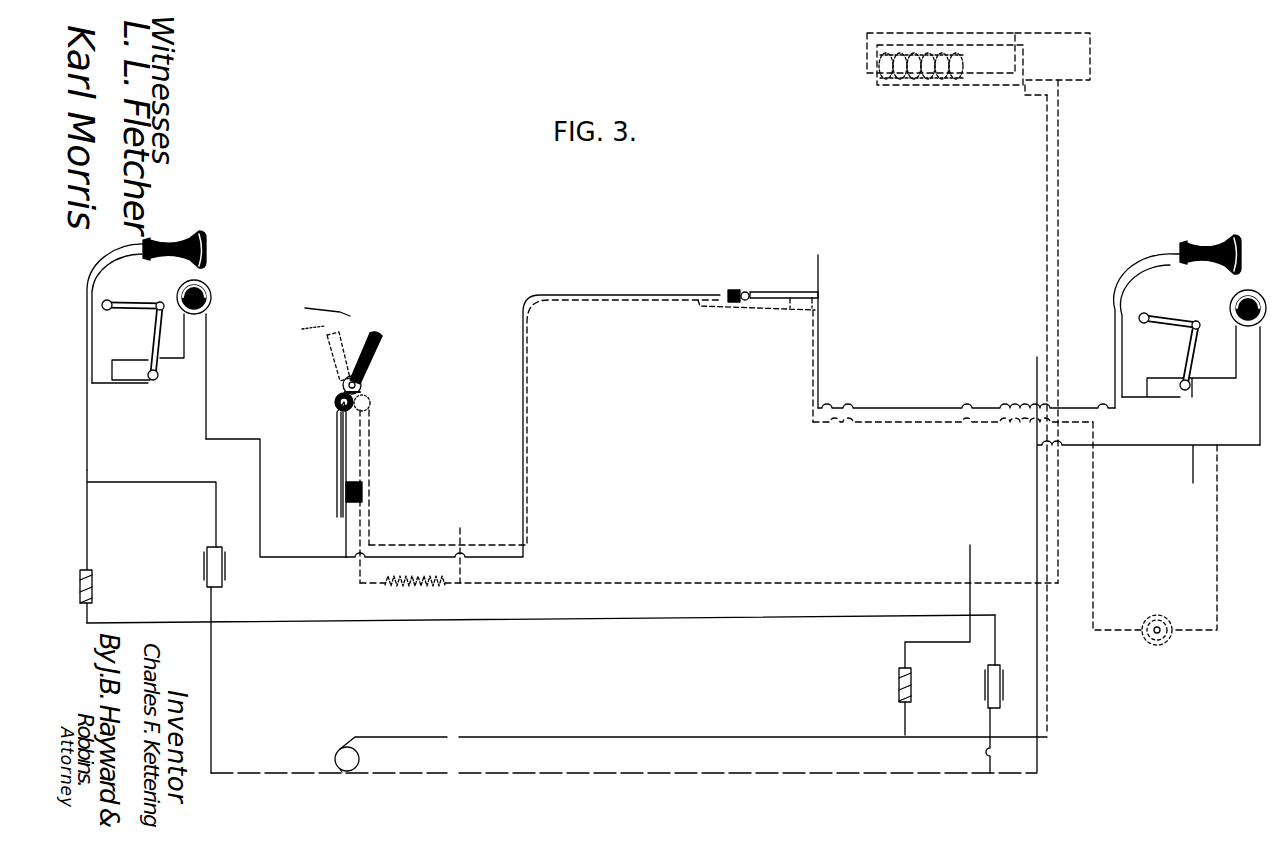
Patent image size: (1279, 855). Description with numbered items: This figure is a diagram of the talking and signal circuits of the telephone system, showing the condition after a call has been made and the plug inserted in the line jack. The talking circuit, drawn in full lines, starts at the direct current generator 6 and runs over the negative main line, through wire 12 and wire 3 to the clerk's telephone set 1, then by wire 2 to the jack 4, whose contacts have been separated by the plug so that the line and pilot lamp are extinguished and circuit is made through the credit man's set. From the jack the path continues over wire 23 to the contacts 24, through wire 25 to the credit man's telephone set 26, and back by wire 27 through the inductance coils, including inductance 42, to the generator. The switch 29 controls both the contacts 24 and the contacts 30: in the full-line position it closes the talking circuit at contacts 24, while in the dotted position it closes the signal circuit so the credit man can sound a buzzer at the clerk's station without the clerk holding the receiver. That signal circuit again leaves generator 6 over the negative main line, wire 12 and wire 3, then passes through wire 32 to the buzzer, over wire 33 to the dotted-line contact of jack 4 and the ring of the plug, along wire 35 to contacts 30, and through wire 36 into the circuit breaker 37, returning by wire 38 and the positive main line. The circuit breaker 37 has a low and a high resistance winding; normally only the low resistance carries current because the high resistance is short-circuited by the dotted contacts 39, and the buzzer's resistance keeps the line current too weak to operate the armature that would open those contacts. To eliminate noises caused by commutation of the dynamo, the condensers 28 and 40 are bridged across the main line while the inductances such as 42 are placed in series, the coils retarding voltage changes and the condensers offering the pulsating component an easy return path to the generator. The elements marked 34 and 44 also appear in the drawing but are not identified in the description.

The telephone set 1 is at (1200, 290).
The wire 2 is at (966, 399).
The wire 3 is at (989, 432).
The jack 4 is at (812, 292).
The generator 6 is at (334, 759).
The wire 12 is at (1037, 627).
The wire 23 is at (530, 305).
The contacts 24 is at (340, 433).
The wire 25 is at (238, 441).
The telephone set 26 is at (149, 350).
The wire 27 is at (88, 466).
The condenser 28 is at (205, 557).
The switch 29 is at (366, 392).
The contacts 30 is at (372, 424).
The wire 32 is at (1218, 492).
The wire 33 is at (1095, 495).
The bell 34 is at (1148, 642).
The wire 35 is at (527, 427).
The wire 36 is at (709, 566).
The circuit breaker 37 is at (942, 82).
The wire 38 is at (1051, 384).
The contacts 39 is at (903, 38).
The condenser 40 is at (986, 680).
The inductance 42 is at (898, 673).
The resistance 44 is at (93, 593).